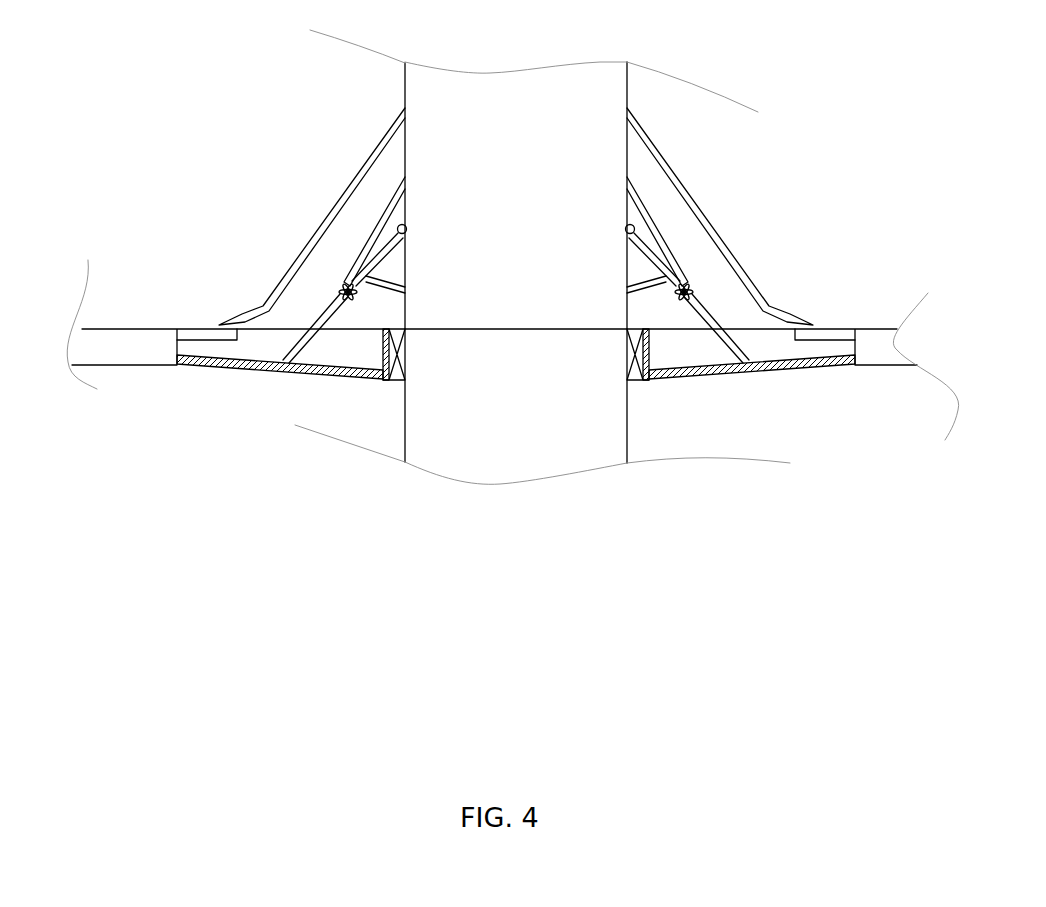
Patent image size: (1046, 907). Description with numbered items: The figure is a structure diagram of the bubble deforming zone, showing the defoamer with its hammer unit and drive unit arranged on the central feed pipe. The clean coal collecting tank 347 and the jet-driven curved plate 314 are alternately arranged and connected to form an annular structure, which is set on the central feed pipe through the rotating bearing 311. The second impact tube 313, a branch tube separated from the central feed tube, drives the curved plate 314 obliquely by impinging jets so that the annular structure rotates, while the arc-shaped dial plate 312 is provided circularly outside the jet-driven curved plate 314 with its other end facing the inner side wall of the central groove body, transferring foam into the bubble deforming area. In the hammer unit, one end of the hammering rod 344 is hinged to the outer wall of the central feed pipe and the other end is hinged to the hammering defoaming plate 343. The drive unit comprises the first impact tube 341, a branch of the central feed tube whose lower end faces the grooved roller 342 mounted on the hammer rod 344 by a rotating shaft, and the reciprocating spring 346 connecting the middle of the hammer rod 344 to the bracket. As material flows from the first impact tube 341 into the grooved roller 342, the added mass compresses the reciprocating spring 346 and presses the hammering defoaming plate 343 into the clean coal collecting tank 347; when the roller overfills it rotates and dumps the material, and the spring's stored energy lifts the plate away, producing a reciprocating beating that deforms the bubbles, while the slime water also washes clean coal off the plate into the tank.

The rotating bearing 311 is at (632, 380).
The arc-shaped dial plate 312 is at (90, 345).
The second impact tube 313 is at (700, 215).
The jet-driven curved plate 314 is at (808, 328).
The first impact tube 341 is at (373, 232).
The grooved roller 342 is at (343, 290).
The hammering defoaming plate 343 is at (787, 372).
The hammering rod 344 is at (710, 313).
The reciprocating spring 346 is at (647, 273).
The clean coal collecting tank 347 is at (177, 345).